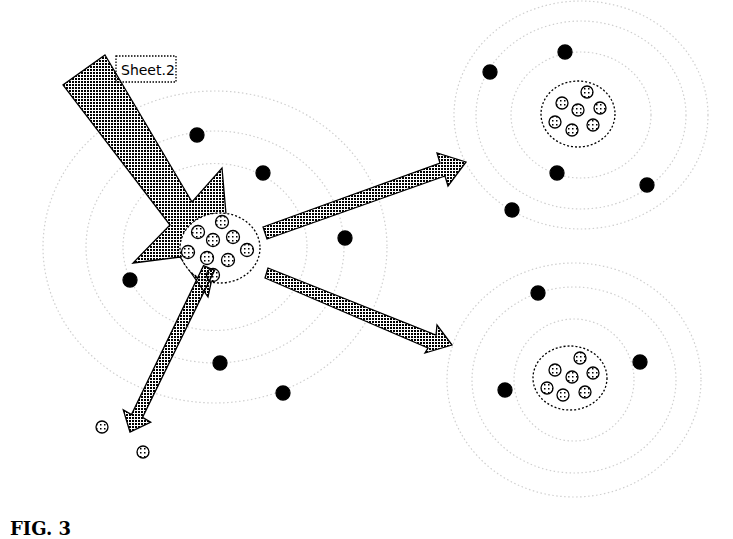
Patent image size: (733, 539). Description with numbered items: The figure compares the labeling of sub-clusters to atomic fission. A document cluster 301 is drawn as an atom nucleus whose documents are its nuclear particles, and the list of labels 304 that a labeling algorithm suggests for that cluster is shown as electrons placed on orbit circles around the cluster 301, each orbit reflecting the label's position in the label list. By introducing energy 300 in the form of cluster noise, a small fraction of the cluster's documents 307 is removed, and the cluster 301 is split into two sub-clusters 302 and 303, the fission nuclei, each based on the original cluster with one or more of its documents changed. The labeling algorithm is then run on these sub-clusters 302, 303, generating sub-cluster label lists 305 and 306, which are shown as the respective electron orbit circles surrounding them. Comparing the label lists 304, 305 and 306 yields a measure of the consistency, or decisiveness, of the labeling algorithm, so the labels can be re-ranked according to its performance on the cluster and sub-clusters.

The energy 300 is at (144, 176).
The document cluster 301 is at (220, 263).
The sub-cluster 302 is at (578, 128).
The sub-cluster 303 is at (570, 393).
The list of labels 304 is at (217, 124).
The sub-cluster label list 305 is at (496, 59).
The sub-cluster label list 306 is at (492, 376).
The removed documents 307 is at (113, 448).